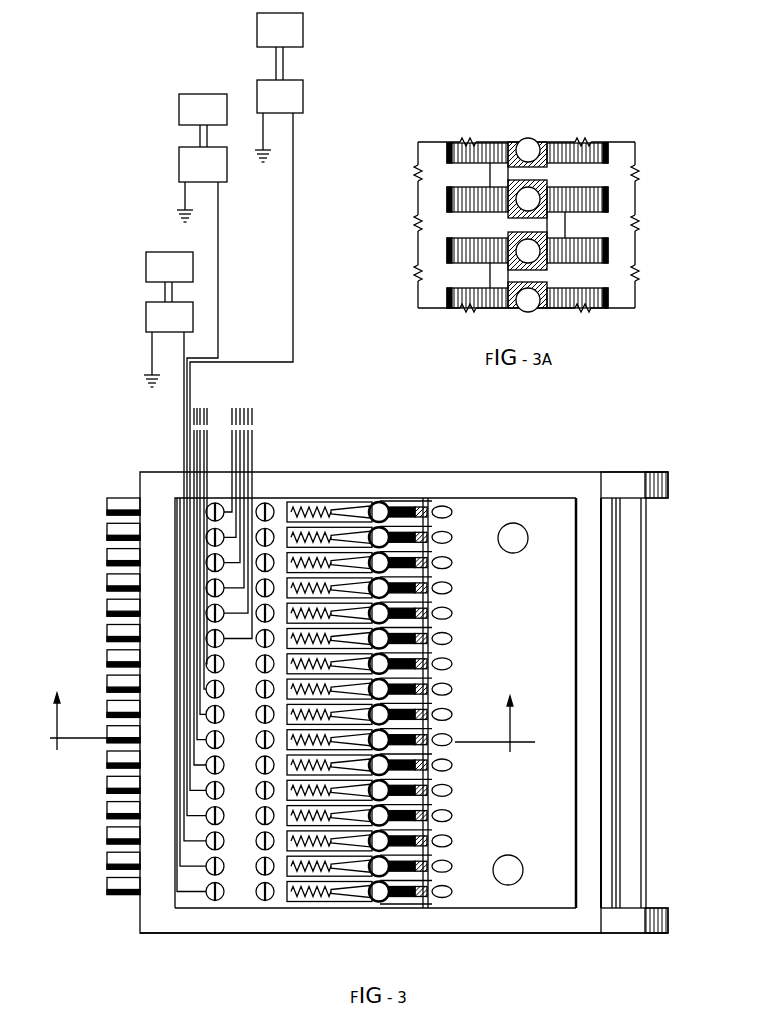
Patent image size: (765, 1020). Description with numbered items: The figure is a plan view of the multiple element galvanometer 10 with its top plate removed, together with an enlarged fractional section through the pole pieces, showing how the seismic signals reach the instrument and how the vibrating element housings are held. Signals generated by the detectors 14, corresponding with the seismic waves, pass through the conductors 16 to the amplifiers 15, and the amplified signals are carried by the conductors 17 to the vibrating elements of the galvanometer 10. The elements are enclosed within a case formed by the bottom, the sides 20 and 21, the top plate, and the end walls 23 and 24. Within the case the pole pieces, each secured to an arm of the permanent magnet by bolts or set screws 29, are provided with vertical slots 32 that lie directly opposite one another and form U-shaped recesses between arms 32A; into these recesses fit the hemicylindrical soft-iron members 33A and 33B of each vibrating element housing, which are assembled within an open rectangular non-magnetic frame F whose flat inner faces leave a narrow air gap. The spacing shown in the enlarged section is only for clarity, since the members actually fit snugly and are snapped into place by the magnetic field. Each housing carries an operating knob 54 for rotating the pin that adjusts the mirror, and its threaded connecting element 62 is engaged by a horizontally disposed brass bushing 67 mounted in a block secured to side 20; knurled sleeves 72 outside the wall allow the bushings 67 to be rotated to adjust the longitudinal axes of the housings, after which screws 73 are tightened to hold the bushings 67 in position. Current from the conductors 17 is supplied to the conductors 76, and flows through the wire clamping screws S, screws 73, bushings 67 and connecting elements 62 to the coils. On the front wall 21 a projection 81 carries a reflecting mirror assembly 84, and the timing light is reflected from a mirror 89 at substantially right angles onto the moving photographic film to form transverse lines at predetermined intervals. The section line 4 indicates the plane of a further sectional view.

In FIG. 3, the multiple element galvanometer 10 is at (421, 463).
In FIG. 3, the detectors 14 is at (303, 35).
In FIG. 3, the amplifiers 15 is at (303, 94).
In FIG. 3, the conductors 16 is at (284, 63).
In FIG. 3, the conductors 17 is at (294, 200).
In FIG. 3, the side 20 is at (138, 918).
In FIG. 3, the side 21 is at (596, 801).
In FIG. 3, the end wall 23 is at (494, 480).
In FIG. 3, the end wall 24 is at (262, 932).
In FIG. 3, the set screws 29 is at (498, 538).
In FIG. 3A, the vertical slots 32 is at (447, 197).
In FIG. 3A, the arms 32A is at (491, 167).
In FIG. 3A, the member 33A is at (462, 190).
In FIG. 3, the member 33B is at (410, 502).
In FIG. 3A, the member 33B is at (592, 190).
In FIG. 3, the section line 4- 4 is at (40, 737).
In FIG. 3, the operating knob 54 is at (364, 504).
In FIG. 3, the connecting elements 62 is at (330, 506).
In FIG. 3, the bushings 67 is at (440, 601).
In FIG. 3, the sleeves 72 is at (107, 610).
In FIG. 3, the screws 73 is at (262, 502).
In FIG. 3, the conductors 76 is at (244, 448).
In FIG. 3, the projection 81 is at (669, 473).
In FIG. 3, the reflecting mirror assembly 84 is at (628, 623).
In FIG. 3, the mirror 89 is at (640, 567).
In FIG. 3A, the frame F is at (538, 146).
In FIG. 3, the wire clamping screws S is at (226, 504).